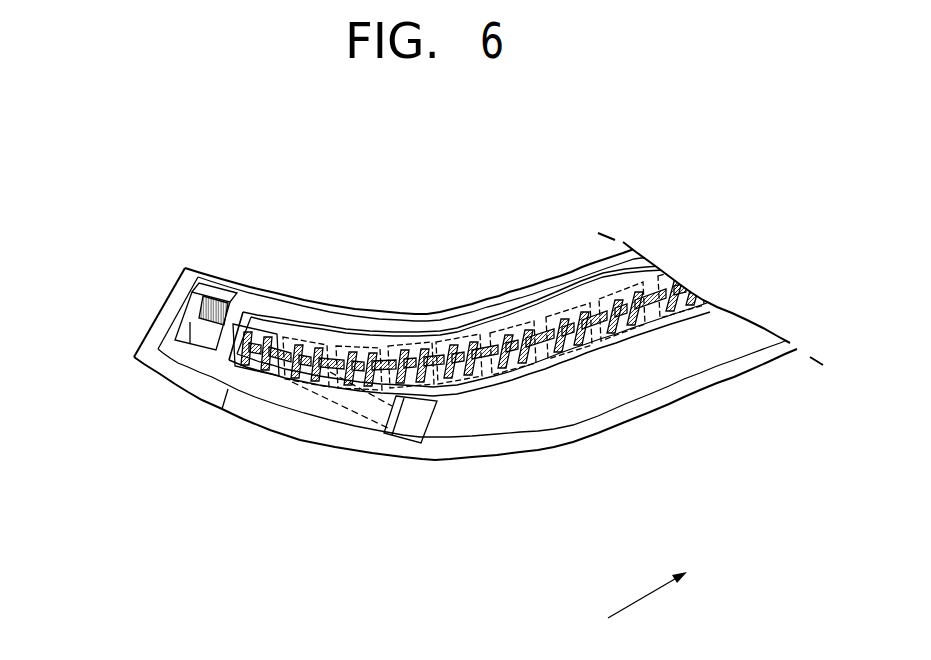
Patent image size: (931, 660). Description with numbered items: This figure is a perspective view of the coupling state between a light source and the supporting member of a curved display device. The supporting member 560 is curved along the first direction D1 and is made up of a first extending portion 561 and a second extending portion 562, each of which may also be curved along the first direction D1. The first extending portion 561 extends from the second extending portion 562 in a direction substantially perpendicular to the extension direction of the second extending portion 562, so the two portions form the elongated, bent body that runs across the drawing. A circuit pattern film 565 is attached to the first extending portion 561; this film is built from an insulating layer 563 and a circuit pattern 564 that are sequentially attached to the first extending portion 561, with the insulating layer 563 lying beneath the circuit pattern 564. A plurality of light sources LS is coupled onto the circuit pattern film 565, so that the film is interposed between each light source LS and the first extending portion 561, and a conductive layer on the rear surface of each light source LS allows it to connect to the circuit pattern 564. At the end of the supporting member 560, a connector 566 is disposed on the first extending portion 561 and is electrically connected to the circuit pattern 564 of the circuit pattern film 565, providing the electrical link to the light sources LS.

The supporting member 560 is at (292, 223).
The first extending portion 561 is at (163, 302).
The second extending portion 562 is at (190, 379).
The insulating layer 563 is at (413, 333).
The circuit pattern 564 is at (457, 337).
The circuit pattern film 565 is at (496, 290).
The connector 566 is at (187, 330).
The light source LS is at (413, 422).
The first direction D1 is at (660, 584).